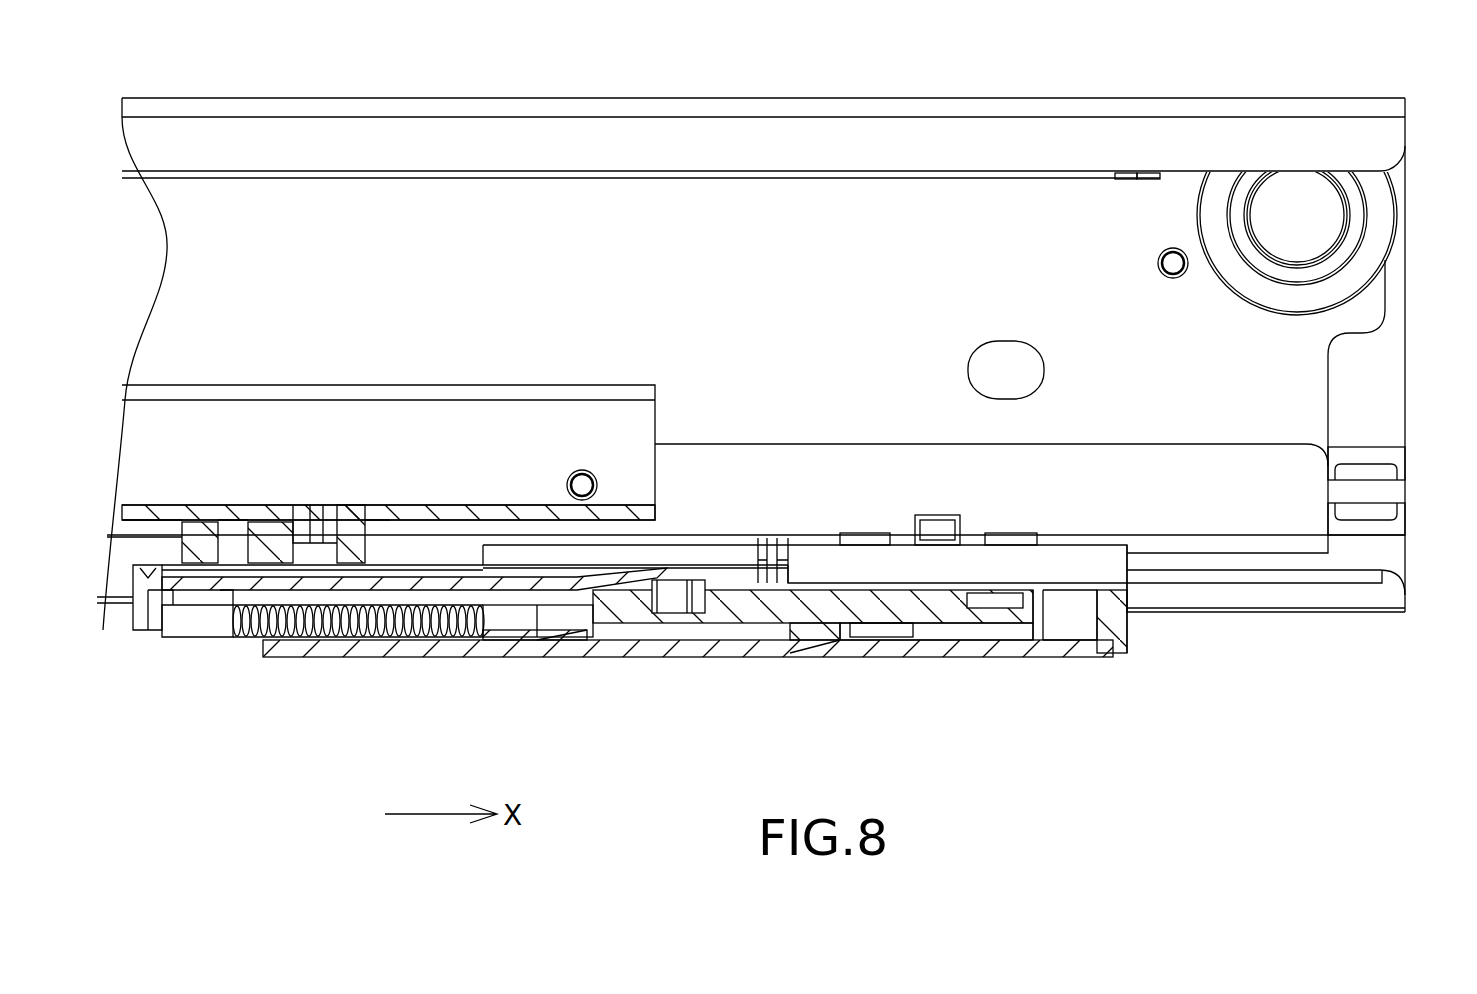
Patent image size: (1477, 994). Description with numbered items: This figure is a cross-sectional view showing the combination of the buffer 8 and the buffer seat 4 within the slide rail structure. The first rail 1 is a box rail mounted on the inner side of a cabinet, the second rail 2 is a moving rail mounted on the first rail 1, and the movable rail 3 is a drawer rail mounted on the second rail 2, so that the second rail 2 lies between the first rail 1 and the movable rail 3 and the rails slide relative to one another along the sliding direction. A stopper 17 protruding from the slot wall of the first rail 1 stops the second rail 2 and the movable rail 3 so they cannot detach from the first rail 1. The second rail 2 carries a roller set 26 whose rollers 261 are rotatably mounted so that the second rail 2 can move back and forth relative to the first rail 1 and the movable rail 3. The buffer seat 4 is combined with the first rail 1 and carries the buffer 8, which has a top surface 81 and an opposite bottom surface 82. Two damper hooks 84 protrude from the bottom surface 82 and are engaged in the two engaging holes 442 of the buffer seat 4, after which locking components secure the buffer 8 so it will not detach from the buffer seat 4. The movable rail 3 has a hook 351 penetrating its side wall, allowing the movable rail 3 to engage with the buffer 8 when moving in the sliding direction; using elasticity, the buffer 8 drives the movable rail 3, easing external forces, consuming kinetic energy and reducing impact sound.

The first rail 1 is at (1246, 104).
The second rail 2 is at (1380, 310).
The movable rail 3 is at (397, 389).
The buffer seat 4 is at (1005, 657).
The buffer 8 is at (644, 601).
The stopper 17 is at (1398, 457).
The roller set 26 is at (1243, 278).
The rollers 261 is at (1297, 215).
The top surface 81 is at (1086, 545).
The bottom surface 82 is at (697, 624).
The damper hook 84 is at (570, 646).
The hook 351 is at (266, 520).
The engaging hole 442 is at (679, 673).